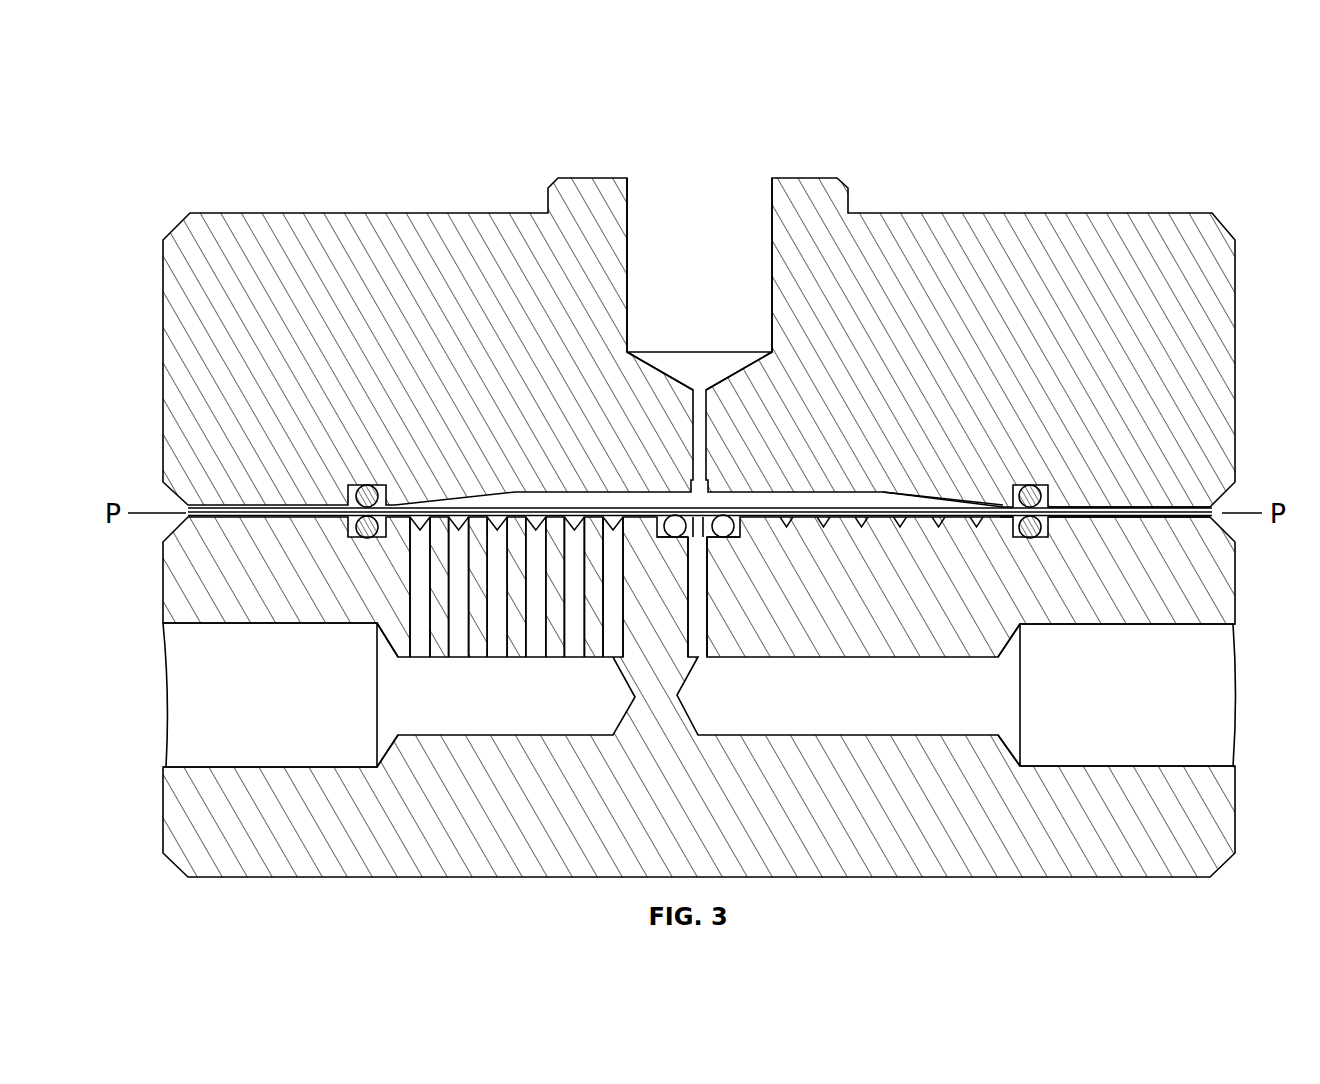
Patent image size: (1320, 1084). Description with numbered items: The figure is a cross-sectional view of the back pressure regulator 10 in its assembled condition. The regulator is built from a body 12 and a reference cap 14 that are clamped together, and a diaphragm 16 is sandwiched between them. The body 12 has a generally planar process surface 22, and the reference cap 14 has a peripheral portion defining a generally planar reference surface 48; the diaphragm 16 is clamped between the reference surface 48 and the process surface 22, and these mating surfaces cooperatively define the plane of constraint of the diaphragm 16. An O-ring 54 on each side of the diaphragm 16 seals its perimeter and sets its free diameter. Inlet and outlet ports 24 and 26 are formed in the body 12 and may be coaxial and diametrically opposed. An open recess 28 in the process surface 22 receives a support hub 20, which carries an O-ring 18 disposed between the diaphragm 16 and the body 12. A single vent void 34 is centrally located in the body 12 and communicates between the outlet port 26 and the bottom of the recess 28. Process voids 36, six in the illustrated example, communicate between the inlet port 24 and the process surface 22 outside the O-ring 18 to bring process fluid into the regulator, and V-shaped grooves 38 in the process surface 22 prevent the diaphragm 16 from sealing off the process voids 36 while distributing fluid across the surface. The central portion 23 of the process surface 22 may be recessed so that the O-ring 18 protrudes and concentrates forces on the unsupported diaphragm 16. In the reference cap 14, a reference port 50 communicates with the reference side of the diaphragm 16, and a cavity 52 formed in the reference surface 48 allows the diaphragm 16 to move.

The back pressure regulator 10 is at (1220, 104).
The body 12 is at (1218, 800).
The reference cap 14 is at (1218, 368).
The diaphragm 16 is at (193, 510).
The O-ring 18 is at (726, 518).
The support hub 20 is at (708, 517).
The process surface 22 is at (1179, 517).
The central portion 23 is at (1003, 518).
The inlet port 24 is at (280, 695).
The outlet port 26 is at (1117, 695).
The open recess 28 is at (733, 540).
The vent void 34 is at (698, 656).
The process void 36 is at (448, 655).
The grooves 38 is at (965, 534).
The reference surface 48 is at (1160, 507).
The reference port 50 is at (770, 215).
The cavity 52 is at (950, 502).
The O-ring 54 is at (369, 492).